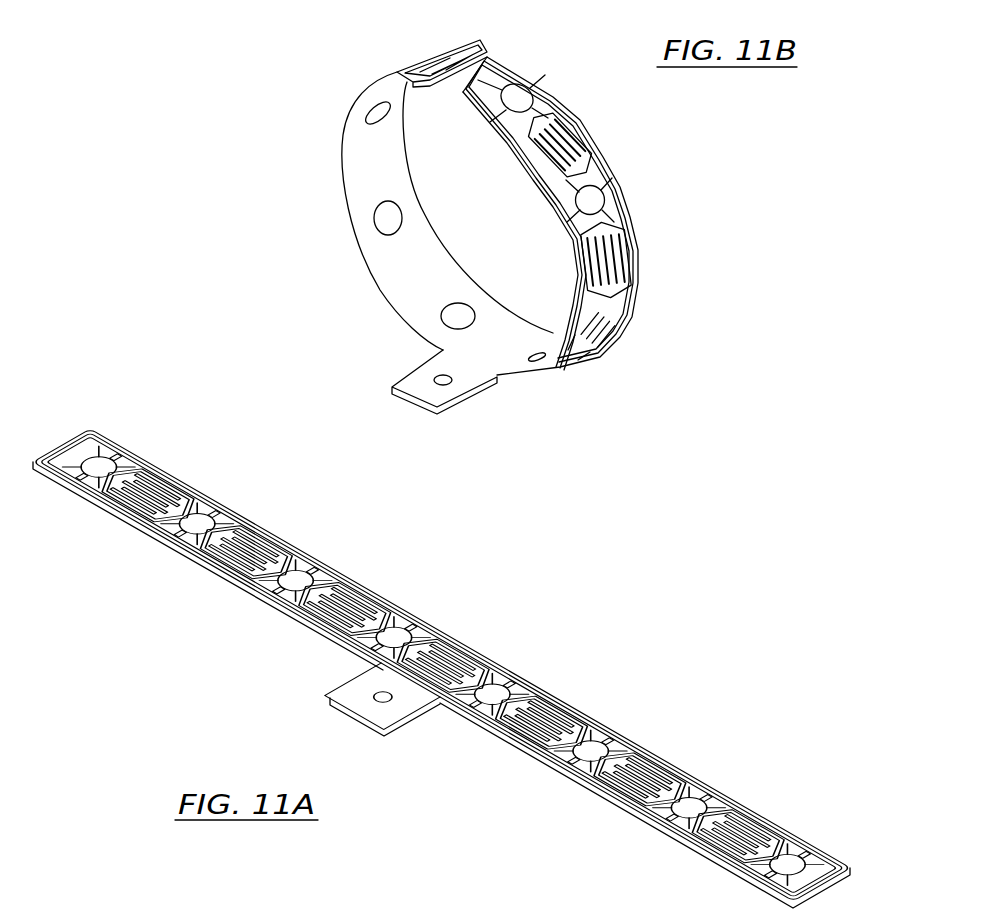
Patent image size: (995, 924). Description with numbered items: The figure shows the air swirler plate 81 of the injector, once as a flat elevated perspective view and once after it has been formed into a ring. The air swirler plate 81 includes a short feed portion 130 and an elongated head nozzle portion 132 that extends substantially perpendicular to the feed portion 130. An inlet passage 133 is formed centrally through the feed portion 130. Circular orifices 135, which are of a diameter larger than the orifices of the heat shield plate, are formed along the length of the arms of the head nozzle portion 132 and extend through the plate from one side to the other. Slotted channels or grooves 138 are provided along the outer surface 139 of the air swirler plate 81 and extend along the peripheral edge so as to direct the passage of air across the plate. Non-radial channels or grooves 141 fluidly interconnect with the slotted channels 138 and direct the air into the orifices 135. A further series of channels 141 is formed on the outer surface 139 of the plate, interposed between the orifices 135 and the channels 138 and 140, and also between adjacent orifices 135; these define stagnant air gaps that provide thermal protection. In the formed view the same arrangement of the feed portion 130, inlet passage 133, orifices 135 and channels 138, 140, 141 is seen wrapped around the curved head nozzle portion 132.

In FIG. 11B, the air swirler plate 81 is at (495, 231).
In FIG. 11A, the air swirler plate 81 is at (442, 668).
In FIG. 11B, the feed portion 130 is at (442, 385).
In FIG. 11A, the feed portion 130 is at (373, 707).
In FIG. 11B, the head nozzle portion 132 is at (519, 207).
In FIG. 11A, the head nozzle portion 132 is at (556, 697).
In FIG. 11B, the inlet passage 133 is at (433, 375).
In FIG. 11A, the inlet passage 133 is at (370, 698).
In FIG. 11B, the circular orifices 135 is at (372, 220).
In FIG. 11A, the circular orifices 135 is at (505, 685).
In FIG. 11B, the slotted channels 138 is at (615, 223).
In FIG. 11A, the slotted channels 138 is at (310, 624).
In FIG. 11B, the outer surface 139 is at (513, 62).
In FIG. 11A, the outer surface 139 is at (607, 793).
In FIG. 11B, the channels 140 is at (545, 84).
In FIG. 11B, the non-radial channels 141 is at (587, 157).